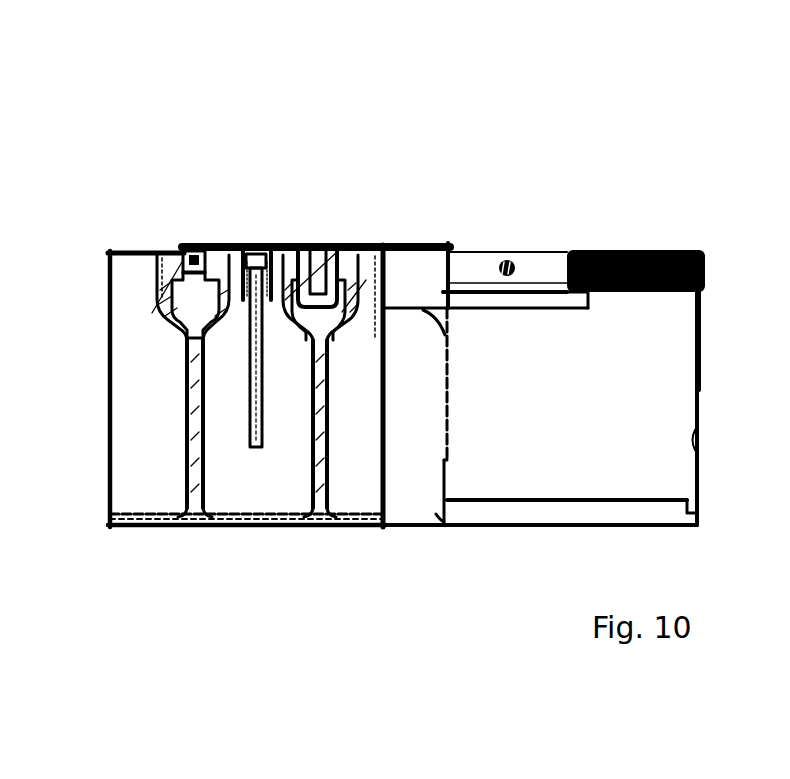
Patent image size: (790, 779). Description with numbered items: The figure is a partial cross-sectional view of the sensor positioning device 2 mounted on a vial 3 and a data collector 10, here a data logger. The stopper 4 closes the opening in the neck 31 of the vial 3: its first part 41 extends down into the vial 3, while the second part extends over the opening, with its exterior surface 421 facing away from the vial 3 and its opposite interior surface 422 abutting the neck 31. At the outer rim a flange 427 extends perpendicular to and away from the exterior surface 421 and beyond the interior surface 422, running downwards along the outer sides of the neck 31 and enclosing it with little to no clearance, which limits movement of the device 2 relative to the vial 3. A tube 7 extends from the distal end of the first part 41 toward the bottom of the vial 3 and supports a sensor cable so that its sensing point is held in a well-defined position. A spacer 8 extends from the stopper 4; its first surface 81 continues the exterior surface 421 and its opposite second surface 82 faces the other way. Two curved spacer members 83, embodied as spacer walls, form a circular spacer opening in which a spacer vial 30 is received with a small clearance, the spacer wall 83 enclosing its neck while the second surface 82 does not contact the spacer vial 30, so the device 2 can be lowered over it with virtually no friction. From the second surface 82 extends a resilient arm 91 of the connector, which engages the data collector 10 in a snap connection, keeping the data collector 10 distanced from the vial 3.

The sensor positioning device 2 is at (281, 125).
The vial 3 is at (237, 527).
The stopper 4 is at (235, 152).
The tube 7 is at (250, 378).
The spacer 8 is at (343, 178).
The data collector 10 is at (613, 222).
The spacer vial 30 is at (360, 527).
The neck 31 is at (150, 250).
The first part 41 is at (247, 280).
The first surface 81 is at (413, 247).
The second surface 82 is at (408, 306).
The spacer member 83 is at (425, 266).
The arm 91 is at (543, 300).
The exterior surface 421 is at (203, 249).
The interior surface 422 is at (213, 247).
The flange 427 is at (184, 247).